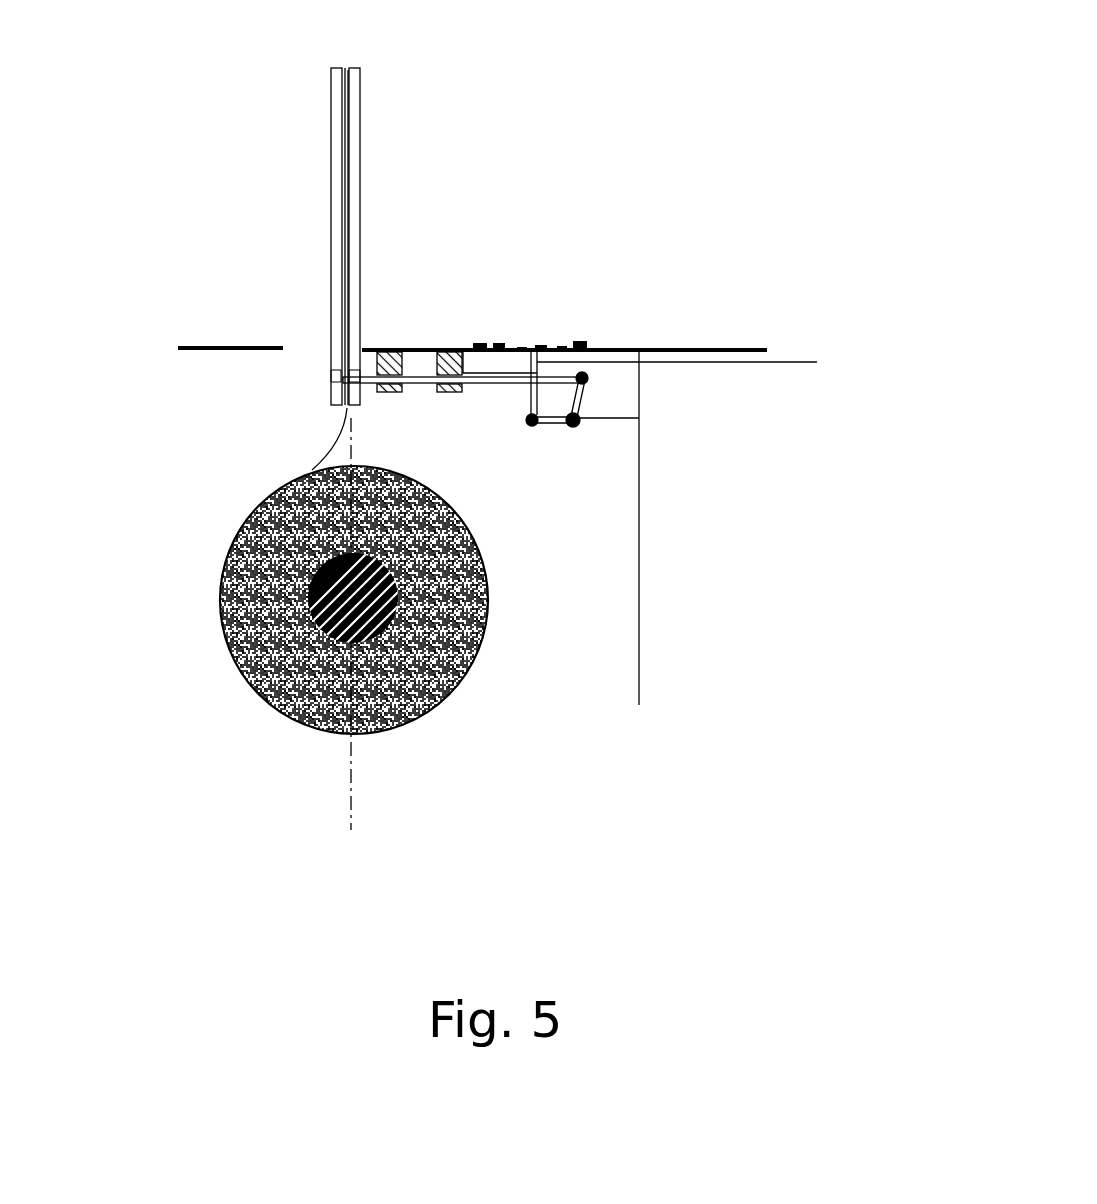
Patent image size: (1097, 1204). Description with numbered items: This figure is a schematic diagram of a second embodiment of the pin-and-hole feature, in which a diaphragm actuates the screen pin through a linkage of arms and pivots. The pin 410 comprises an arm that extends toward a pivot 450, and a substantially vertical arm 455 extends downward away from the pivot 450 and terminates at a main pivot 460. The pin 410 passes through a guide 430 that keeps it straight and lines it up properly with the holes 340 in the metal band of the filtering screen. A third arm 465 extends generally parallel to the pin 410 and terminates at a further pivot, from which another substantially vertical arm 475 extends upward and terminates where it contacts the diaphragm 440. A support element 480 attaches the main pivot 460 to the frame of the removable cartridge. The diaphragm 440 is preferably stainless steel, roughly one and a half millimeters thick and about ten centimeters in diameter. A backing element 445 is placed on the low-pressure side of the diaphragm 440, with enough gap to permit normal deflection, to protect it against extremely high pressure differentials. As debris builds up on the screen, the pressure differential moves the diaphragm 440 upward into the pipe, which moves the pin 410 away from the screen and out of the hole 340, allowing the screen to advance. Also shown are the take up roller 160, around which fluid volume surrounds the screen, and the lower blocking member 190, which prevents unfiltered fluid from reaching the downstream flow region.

The take up roller 160 is at (310, 600).
The lower blocking member 190 is at (616, 348).
The holes 340 is at (337, 367).
The pin 410 is at (450, 352).
The guide 430 is at (389, 352).
The diaphragm 440 is at (518, 347).
The backing element 445 is at (570, 347).
The pivot 450 is at (593, 380).
The substantially vertical arm 455 is at (580, 402).
The main pivot 460 is at (583, 427).
The third arm 465 is at (548, 421).
The substantially vertical arm 475 is at (720, 359).
The support element 480 is at (610, 425).